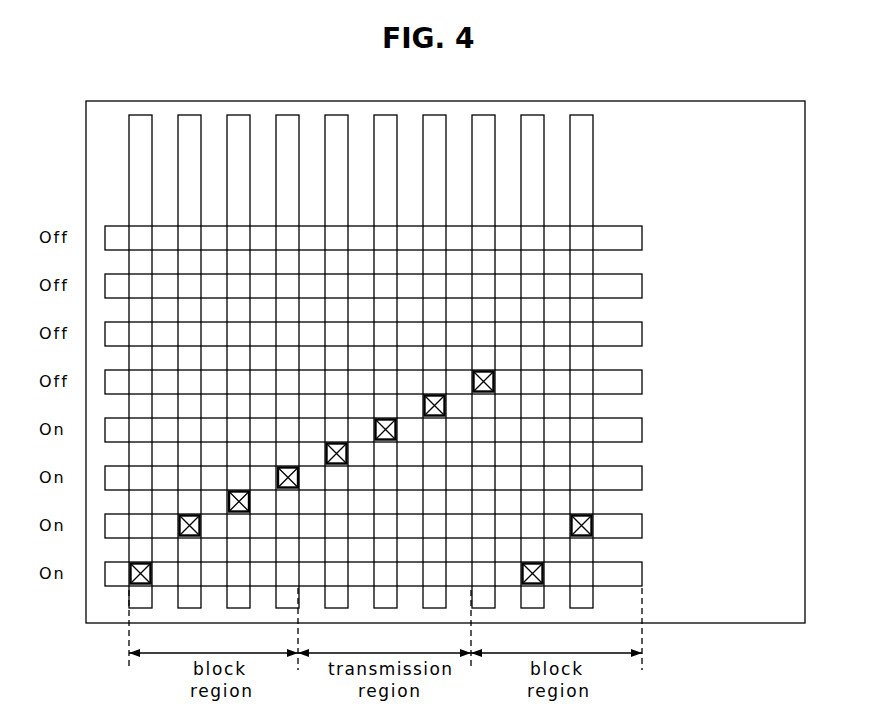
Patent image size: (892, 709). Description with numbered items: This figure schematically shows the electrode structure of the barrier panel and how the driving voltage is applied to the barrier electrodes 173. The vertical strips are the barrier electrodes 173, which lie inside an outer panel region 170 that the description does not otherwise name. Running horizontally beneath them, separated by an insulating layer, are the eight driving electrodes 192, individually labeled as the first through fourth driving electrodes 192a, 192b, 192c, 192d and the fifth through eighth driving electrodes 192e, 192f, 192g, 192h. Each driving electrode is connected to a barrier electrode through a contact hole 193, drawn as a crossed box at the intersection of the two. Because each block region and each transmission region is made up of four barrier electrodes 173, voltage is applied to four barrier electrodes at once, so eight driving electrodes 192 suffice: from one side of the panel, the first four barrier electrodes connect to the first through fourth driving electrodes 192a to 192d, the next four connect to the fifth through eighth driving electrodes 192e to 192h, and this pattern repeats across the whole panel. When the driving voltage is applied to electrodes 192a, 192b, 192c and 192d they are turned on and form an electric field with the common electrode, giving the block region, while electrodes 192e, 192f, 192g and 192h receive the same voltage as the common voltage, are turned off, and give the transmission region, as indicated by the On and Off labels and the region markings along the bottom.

The shutter / pixel array substrate 170 is at (782, 628).
The barrier electrode 173 is at (140, 608).
The driving electrode 192 is at (449, 405).
The first driving electrode 192a is at (413, 573).
The second driving electrode 192b is at (643, 526).
The third driving electrode 192c is at (643, 478).
The fourth driving electrode 192d is at (643, 430).
The fifth driving electrode 192e is at (643, 382).
The sixth driving electrode 192f is at (643, 334).
The seventh driving electrode 192g is at (643, 286).
The eighth driving electrode 192h is at (643, 238).
The contact hole 193 is at (127, 587).